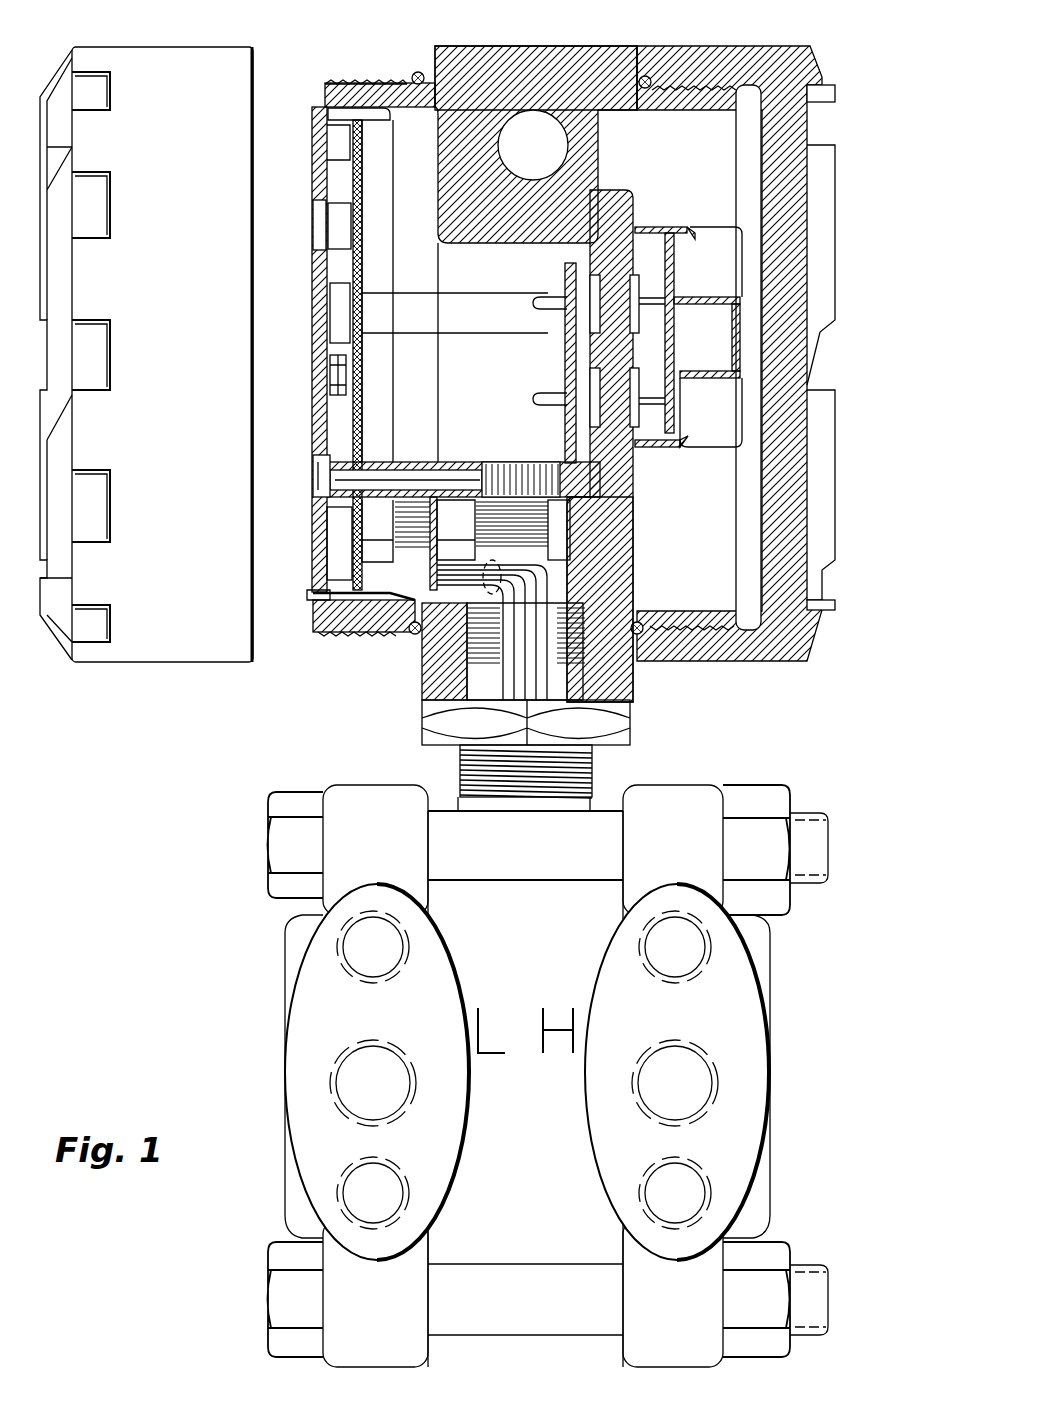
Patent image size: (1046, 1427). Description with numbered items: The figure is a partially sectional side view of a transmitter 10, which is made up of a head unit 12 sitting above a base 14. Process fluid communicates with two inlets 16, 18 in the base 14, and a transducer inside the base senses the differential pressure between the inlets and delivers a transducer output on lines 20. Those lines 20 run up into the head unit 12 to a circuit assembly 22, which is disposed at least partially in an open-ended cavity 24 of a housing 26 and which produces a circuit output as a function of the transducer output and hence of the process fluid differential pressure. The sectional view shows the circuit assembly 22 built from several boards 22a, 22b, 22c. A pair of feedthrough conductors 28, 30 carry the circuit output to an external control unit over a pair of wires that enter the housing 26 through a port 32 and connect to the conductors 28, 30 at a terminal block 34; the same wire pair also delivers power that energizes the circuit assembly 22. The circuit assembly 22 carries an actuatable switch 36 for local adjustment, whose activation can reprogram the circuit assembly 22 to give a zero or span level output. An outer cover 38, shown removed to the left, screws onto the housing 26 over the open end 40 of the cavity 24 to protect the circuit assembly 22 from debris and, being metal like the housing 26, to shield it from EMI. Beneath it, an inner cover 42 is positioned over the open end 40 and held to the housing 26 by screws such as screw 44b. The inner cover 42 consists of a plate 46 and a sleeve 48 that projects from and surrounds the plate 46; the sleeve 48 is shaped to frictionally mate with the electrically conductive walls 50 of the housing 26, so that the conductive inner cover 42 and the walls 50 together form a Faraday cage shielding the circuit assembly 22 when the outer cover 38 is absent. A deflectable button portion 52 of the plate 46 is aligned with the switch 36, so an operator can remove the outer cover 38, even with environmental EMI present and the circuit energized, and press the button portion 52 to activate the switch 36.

The transmitter 10 is at (168, 782).
The head unit 12 is at (830, 672).
The base 14 is at (818, 775).
The inlet 16 is at (348, 1078).
The inlet 18 is at (695, 1073).
The lines 20 is at (467, 592).
The circuit assembly 22 is at (417, 390).
The circuit board 22a is at (362, 435).
The circuit board 22b is at (420, 582).
The circuit board 22c is at (565, 428).
The open-ended cavity 24 is at (446, 108).
The housing 26 is at (500, 60).
The feedthrough conductor 28 is at (582, 296).
The feedthrough conductor 30 is at (626, 472).
The port 32 is at (534, 122).
The terminal block 34 is at (708, 450).
The actuatable switch 36 is at (346, 400).
The outer cover 38 is at (170, 380).
The open end 40 is at (348, 270).
The inner cover 42 is at (313, 557).
The screw 44b is at (315, 492).
The plate 46 is at (312, 165).
The sleeve 48 is at (360, 95).
The electrically conductive walls 50 is at (422, 112).
The deflectable button portion 52 is at (318, 412).